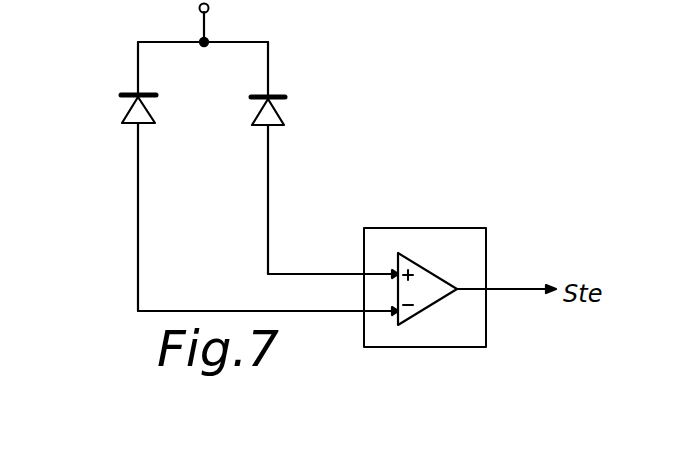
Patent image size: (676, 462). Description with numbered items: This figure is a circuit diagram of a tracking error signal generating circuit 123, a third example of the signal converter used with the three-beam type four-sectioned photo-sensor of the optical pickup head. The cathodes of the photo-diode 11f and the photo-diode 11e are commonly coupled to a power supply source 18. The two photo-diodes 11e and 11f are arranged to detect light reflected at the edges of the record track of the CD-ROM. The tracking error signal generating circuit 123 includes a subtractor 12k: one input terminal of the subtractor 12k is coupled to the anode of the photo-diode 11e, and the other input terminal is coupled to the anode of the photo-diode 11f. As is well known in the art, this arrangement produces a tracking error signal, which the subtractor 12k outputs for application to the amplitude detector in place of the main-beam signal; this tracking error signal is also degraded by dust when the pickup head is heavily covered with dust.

The power supply source 18 is at (209, 9).
The photo-diode 11f is at (123, 120).
The photo-diode 11e is at (284, 122).
The tracking error signal generating circuit 123 is at (455, 228).
The subtractor 12k is at (445, 280).